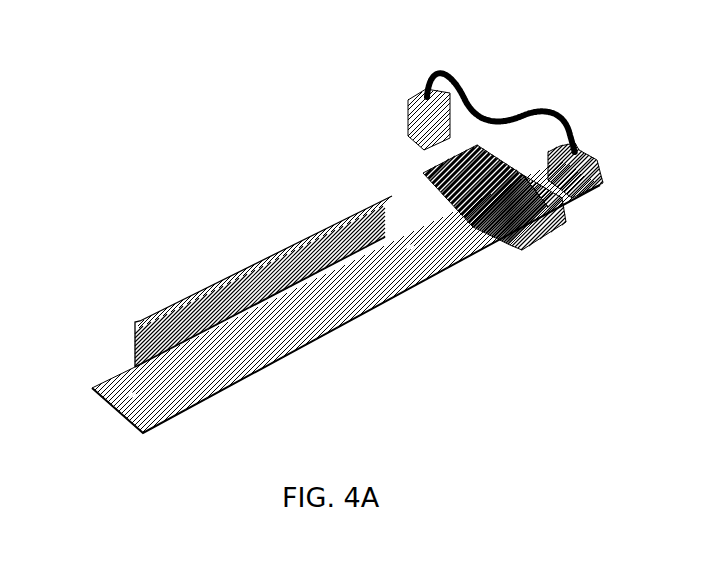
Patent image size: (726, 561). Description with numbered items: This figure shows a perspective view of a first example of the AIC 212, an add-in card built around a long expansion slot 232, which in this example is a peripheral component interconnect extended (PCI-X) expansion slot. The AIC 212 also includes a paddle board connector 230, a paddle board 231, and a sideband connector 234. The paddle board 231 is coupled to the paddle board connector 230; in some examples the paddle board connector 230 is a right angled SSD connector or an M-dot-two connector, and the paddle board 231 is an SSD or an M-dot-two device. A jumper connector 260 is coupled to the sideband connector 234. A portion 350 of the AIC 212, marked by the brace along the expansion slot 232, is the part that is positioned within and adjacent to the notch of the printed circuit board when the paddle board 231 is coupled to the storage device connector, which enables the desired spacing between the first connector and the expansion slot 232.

The AIC 212 is at (559, 50).
The portion 350 is at (385, 172).
The expansion slot 232 is at (227, 331).
The paddle board 231 is at (424, 166).
The paddle board connector 230 is at (503, 236).
The sideband connector 234 is at (581, 181).
The jumper connector 260 is at (558, 103).